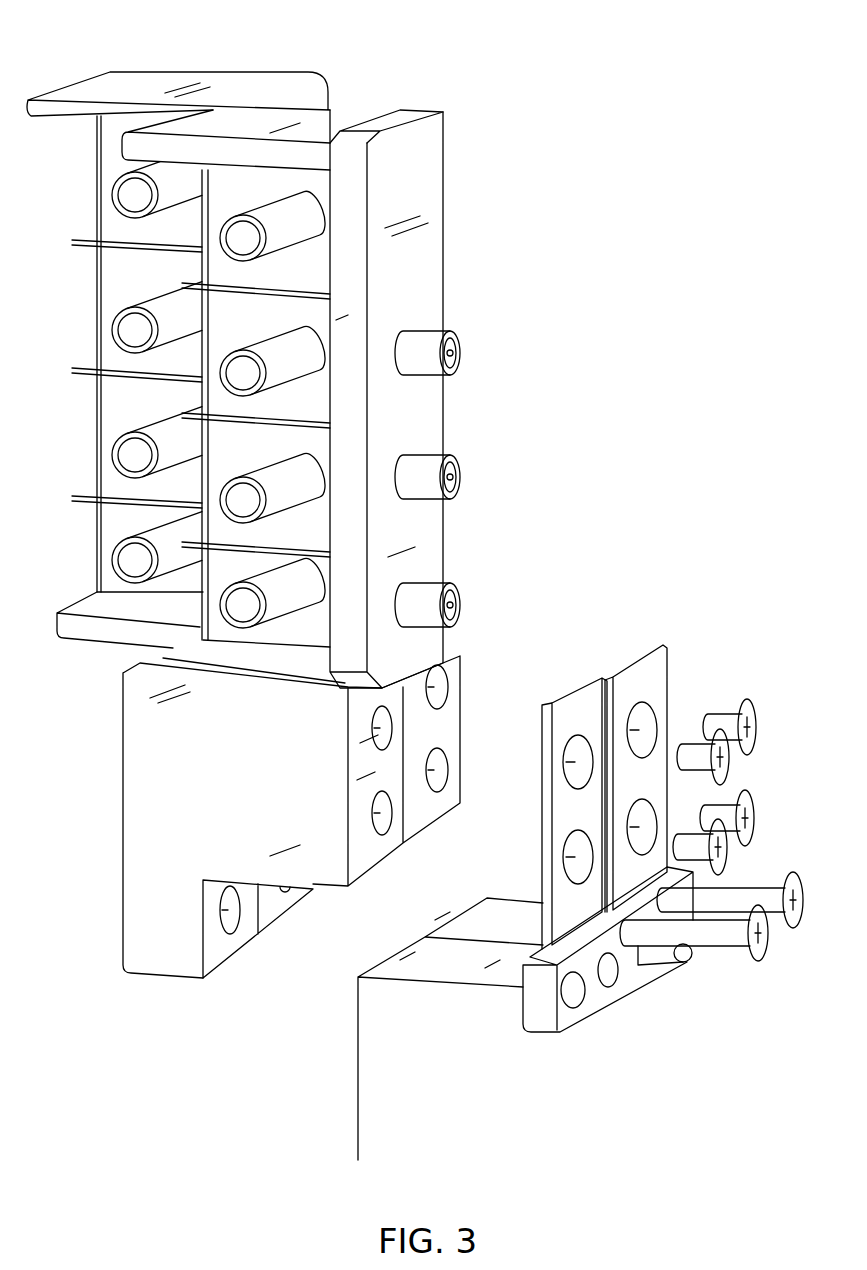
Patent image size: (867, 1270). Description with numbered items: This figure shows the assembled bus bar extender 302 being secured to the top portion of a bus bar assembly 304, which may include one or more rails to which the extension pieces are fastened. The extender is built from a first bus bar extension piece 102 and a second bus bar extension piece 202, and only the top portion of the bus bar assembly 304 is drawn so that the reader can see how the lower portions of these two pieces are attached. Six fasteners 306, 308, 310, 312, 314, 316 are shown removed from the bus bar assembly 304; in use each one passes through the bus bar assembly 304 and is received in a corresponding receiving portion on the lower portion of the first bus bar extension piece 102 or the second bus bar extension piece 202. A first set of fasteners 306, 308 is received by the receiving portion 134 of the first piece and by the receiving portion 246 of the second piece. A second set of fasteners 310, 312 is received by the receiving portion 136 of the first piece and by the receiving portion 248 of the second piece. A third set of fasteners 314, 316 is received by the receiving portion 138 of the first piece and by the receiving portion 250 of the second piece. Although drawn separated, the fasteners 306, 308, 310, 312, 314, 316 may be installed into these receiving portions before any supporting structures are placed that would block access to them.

The first bus bar extension piece 102 is at (252, 72).
The bus bar extender 302 is at (441, 72).
The second bus bar extension piece 202 is at (443, 263).
The bus bar assembly 304 is at (800, 630).
The receiving portion 134 is at (452, 662).
The receiving portion 136 is at (445, 777).
The receiving portion 246 is at (392, 723).
The receiving portion 248 is at (392, 813).
The receiving portion 138 is at (288, 892).
The receiving portion 250 is at (237, 937).
The fastener 306 is at (757, 724).
The fastener 308 is at (730, 768).
The fastener 310 is at (754, 818).
The fastener 312 is at (727, 852).
The fastener 314 is at (793, 875).
The fastener 316 is at (768, 944).